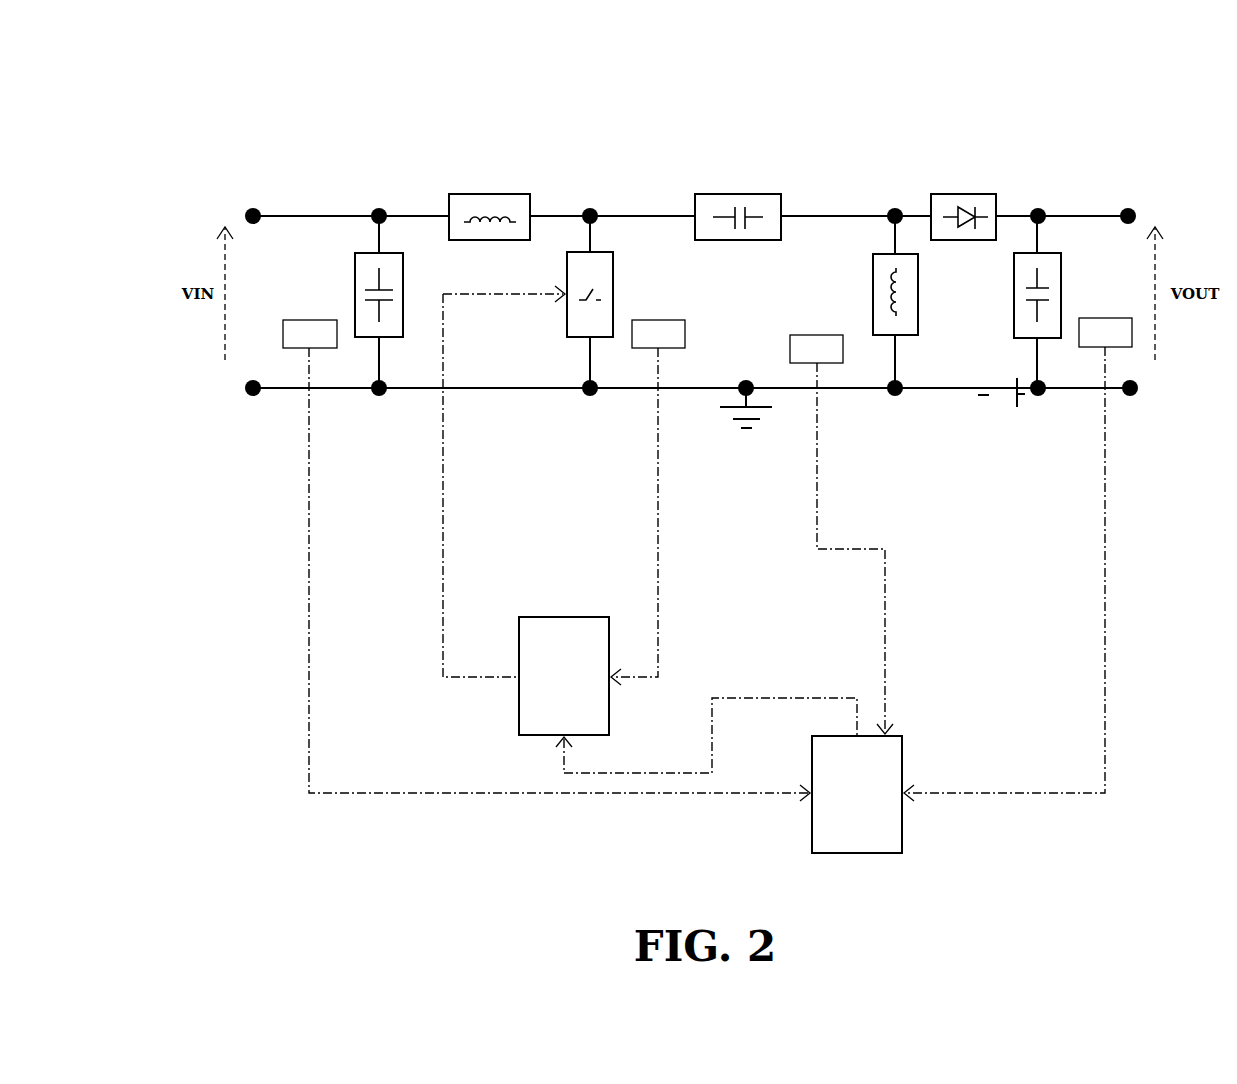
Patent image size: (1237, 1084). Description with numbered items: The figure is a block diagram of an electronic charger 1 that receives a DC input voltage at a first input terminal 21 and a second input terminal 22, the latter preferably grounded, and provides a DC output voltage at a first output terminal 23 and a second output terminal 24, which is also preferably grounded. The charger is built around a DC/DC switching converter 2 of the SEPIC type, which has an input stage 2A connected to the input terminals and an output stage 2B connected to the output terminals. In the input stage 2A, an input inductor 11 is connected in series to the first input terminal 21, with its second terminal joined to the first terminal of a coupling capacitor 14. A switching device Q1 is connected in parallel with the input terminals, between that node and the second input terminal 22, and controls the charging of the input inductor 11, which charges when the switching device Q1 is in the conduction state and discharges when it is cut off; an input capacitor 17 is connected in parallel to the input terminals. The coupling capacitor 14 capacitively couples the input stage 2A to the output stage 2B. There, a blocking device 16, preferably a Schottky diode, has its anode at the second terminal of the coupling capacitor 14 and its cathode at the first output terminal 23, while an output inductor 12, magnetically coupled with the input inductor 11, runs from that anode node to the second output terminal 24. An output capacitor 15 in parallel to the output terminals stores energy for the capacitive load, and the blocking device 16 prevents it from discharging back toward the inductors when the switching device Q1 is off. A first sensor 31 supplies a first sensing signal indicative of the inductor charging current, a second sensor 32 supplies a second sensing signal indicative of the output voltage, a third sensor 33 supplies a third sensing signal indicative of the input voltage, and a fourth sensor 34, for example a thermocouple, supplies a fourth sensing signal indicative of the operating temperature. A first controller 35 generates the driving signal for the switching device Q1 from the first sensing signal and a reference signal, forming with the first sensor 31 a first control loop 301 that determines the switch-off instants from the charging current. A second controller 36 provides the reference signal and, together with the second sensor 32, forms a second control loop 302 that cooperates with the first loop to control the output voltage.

The electronic charger 1 is at (997, 110).
The DC/DC switching converter 2 is at (732, 490).
The input stage 2A is at (495, 443).
The output stage 2B is at (964, 443).
The input inductor 11 is at (485, 194).
The output inductor 12 is at (918, 315).
The coupling capacitor 14 is at (735, 194).
The output capacitor 15 is at (1061, 265).
The blocking device 16 is at (965, 194).
The input capacitor 17 is at (355, 268).
The switching device Q1 is at (613, 293).
The first input terminal 21 is at (243, 185).
The second input terminal 22 is at (248, 408).
The first output terminal 23 is at (1130, 182).
The second output terminal 24 is at (1130, 408).
The first sensor 31 is at (648, 502).
The second sensor 32 is at (1018, 559).
The third sensor 33 is at (546, 560).
The fourth sensor 34 is at (841, 534).
The first controller 35 is at (650, 529).
The second controller 36 is at (857, 794).
The first control loop 301 is at (697, 625).
The second control loop 302 is at (1140, 752).